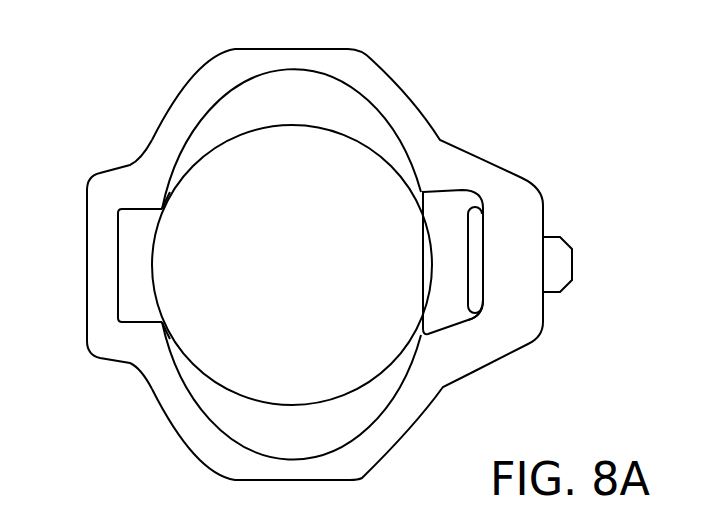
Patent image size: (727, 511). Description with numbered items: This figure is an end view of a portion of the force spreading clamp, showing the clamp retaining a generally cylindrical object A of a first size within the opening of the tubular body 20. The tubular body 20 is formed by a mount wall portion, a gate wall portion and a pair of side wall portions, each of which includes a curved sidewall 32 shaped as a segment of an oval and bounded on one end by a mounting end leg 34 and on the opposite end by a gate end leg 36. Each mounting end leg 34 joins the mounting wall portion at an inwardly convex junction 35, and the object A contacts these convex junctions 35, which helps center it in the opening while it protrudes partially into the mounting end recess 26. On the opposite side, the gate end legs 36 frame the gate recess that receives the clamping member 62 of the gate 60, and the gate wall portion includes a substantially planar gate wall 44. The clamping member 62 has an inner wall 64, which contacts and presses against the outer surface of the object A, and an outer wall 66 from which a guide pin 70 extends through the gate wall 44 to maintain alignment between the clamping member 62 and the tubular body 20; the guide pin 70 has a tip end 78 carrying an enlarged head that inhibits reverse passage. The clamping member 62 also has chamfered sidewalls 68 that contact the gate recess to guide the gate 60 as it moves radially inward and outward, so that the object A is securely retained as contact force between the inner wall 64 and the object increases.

The tubular body 20 is at (418, 92).
The tab 26 is at (100, 289).
The curved sidewall 32 is at (369, 73).
The mounting end leg 34 is at (136, 188).
The inwardly convex junction 35 is at (160, 207).
The gate end leg 36 is at (493, 187).
The gate wall 44 is at (543, 312).
The gate 60 is at (474, 309).
The clamping member 62 is at (449, 192).
The inner wall 64 is at (423, 206).
The outer wall 66 is at (490, 222).
The chamfered sidewalls 68 is at (449, 212).
The guide pin 70 is at (555, 238).
The tip end 78 is at (573, 263).
The object A is at (257, 128).